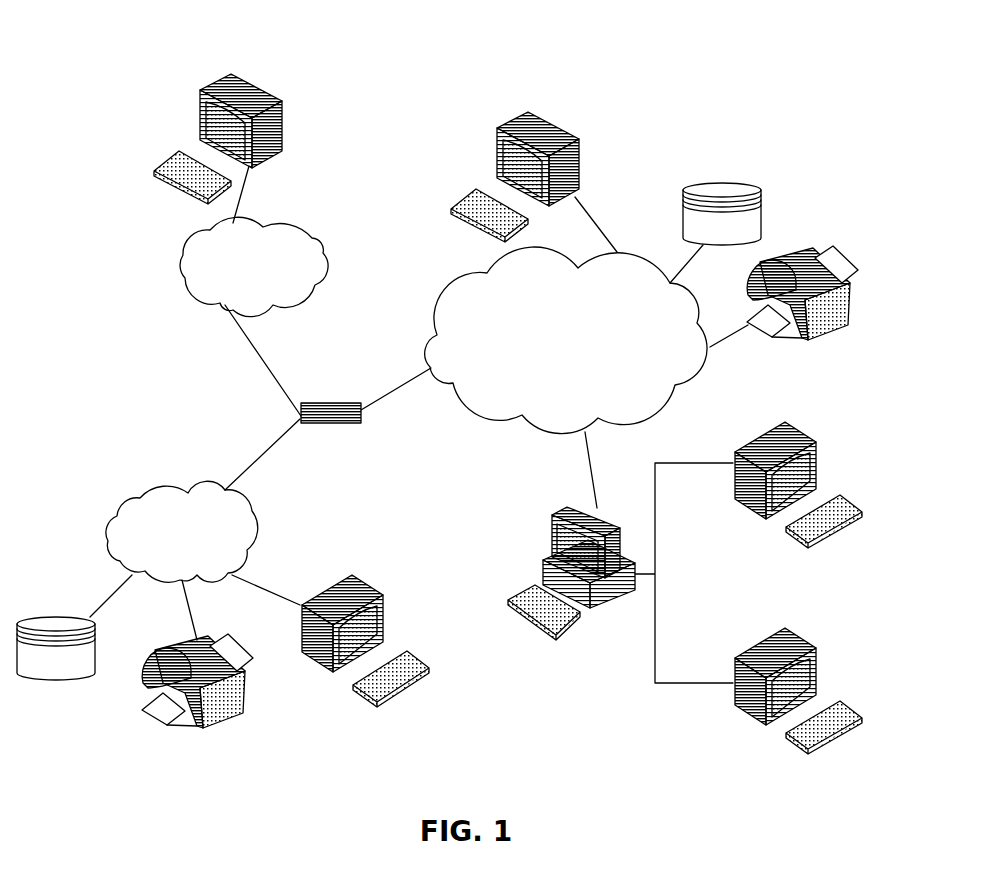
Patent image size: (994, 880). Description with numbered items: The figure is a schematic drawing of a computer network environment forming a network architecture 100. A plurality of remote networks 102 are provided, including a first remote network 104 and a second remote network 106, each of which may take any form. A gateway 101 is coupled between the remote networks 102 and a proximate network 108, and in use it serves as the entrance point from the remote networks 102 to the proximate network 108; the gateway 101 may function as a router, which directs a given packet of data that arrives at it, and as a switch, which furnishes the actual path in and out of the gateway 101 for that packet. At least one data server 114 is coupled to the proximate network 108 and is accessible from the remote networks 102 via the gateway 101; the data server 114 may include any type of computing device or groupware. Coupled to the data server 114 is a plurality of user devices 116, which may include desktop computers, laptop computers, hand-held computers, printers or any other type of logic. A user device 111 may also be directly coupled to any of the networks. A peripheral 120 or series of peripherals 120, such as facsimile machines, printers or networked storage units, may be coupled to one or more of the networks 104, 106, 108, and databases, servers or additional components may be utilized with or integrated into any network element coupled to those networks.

The network architecture 100 is at (142, 58).
The gateway 101 is at (318, 402).
The remote networks 102 is at (170, 320).
The first remote network 104 is at (110, 508).
The second remote network 106 is at (320, 241).
The proximate network 108 is at (668, 405).
The user device 111 is at (581, 140).
The data server 114 is at (552, 529).
The user devices 116 is at (283, 110).
The peripheral 120 is at (761, 190).